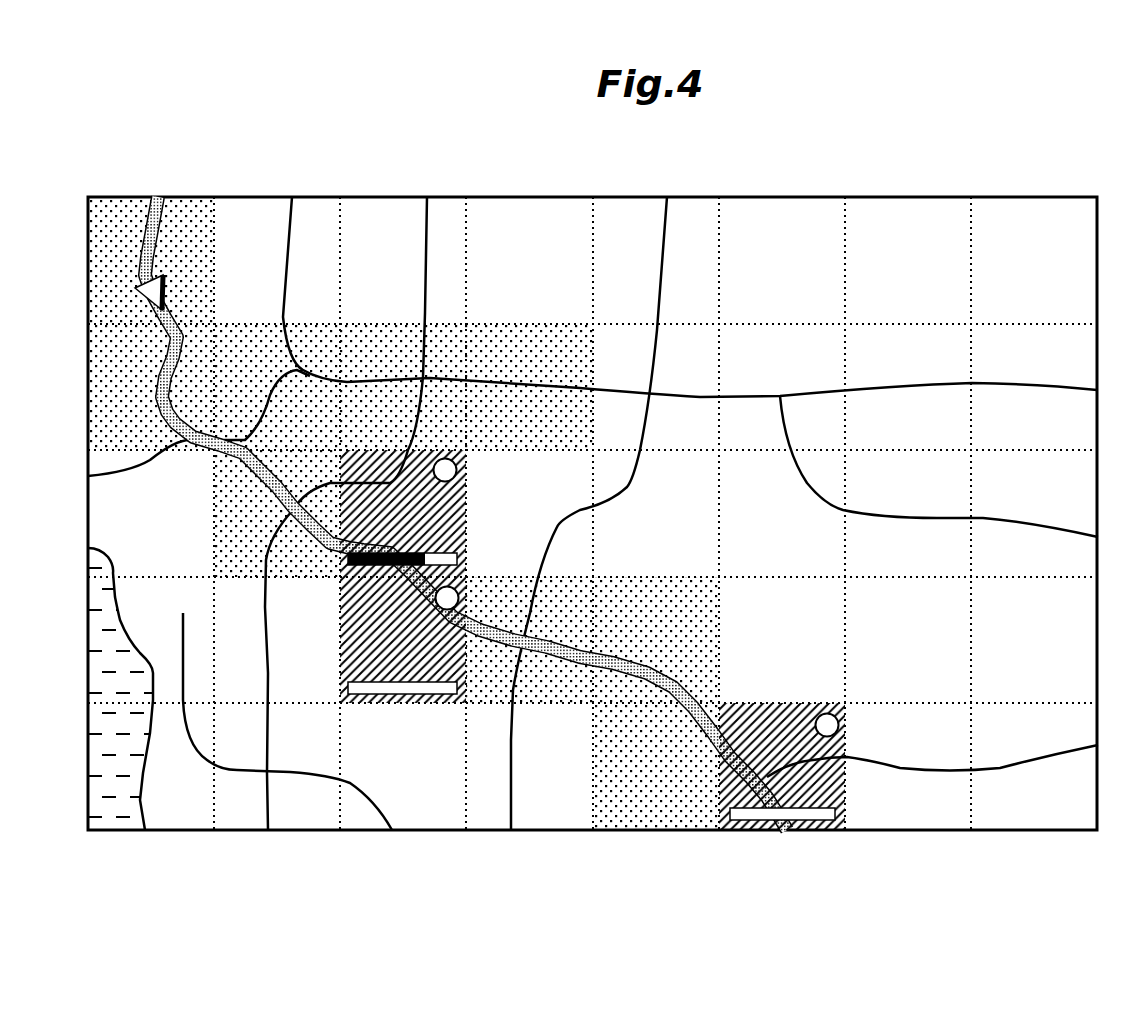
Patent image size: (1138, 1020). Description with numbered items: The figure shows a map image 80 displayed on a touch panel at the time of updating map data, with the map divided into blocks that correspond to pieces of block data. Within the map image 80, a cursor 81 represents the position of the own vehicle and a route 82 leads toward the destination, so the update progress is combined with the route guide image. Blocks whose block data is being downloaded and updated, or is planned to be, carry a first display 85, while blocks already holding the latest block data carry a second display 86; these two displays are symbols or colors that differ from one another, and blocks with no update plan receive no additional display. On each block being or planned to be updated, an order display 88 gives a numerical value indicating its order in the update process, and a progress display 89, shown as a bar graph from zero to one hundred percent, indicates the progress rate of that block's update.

The map image 80 is at (810, 186).
The cursor 81 is at (166, 279).
The route 82 is at (88, 477).
The first display 85 is at (450, 517).
The second display 86 is at (523, 333).
The order display 88 is at (457, 461).
The progress display 89 is at (373, 570).